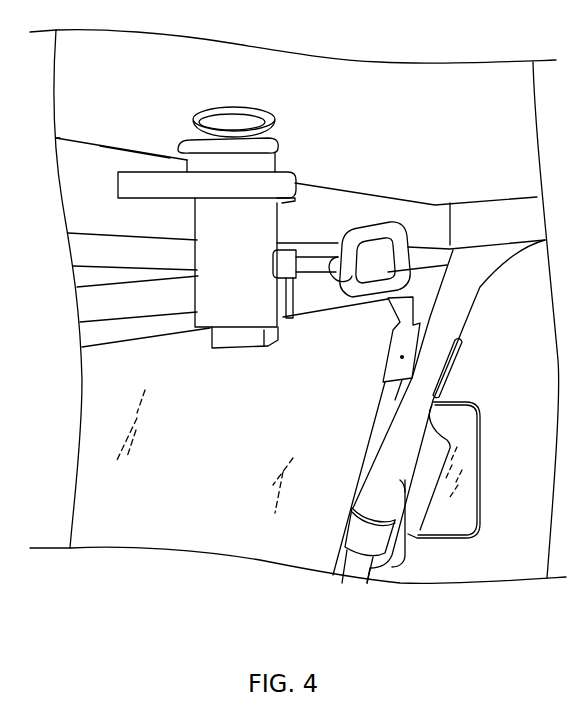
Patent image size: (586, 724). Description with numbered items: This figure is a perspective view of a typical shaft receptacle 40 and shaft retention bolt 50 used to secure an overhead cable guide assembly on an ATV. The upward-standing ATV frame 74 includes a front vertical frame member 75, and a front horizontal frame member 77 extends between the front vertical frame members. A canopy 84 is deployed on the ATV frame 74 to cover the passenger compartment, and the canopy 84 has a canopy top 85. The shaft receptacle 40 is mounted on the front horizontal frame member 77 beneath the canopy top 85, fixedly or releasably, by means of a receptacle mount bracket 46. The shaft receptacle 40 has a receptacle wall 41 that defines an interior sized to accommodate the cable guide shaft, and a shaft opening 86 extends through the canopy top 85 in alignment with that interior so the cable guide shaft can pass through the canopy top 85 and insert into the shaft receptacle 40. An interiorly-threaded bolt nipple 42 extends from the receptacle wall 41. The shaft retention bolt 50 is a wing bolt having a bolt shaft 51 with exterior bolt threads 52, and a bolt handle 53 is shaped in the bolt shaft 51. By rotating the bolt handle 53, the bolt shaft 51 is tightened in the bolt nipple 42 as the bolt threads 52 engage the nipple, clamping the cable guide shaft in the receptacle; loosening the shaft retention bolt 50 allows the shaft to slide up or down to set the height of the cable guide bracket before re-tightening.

The shaft receptacle 40 is at (197, 325).
The receptacle wall 41 is at (268, 349).
The bolt nipple 42 is at (289, 322).
The receptacle mount bracket 46 is at (162, 190).
The shaft retention bolt 50 is at (370, 298).
The bolt shaft 51 is at (333, 274).
The bolt threads 52 is at (305, 280).
The bolt handle 53 is at (388, 300).
The ATV frame 74 is at (377, 458).
The front vertical frame member 75 is at (397, 433).
The front horizontal frame member 77 is at (123, 250).
The canopy 84 is at (80, 145).
The canopy top 85 is at (118, 142).
The shaft opening 86 is at (276, 119).